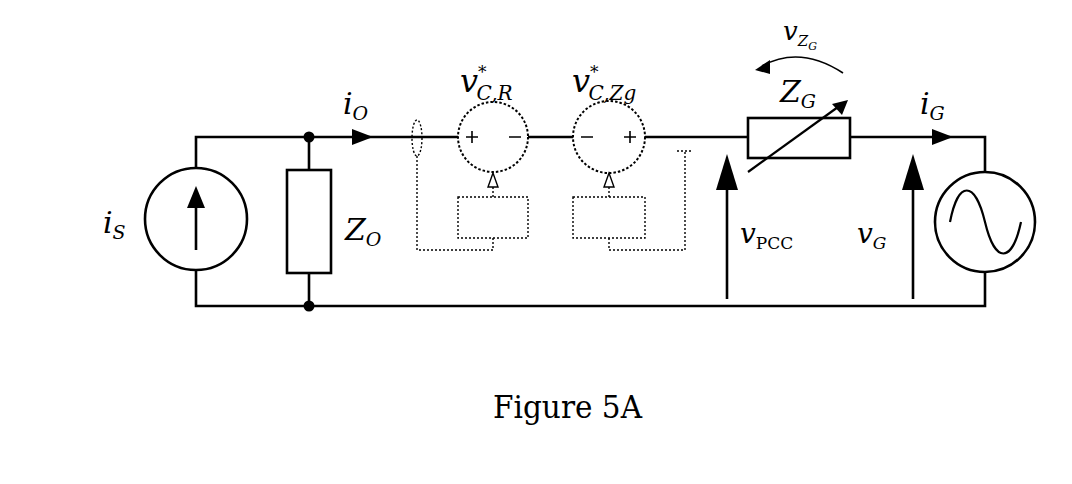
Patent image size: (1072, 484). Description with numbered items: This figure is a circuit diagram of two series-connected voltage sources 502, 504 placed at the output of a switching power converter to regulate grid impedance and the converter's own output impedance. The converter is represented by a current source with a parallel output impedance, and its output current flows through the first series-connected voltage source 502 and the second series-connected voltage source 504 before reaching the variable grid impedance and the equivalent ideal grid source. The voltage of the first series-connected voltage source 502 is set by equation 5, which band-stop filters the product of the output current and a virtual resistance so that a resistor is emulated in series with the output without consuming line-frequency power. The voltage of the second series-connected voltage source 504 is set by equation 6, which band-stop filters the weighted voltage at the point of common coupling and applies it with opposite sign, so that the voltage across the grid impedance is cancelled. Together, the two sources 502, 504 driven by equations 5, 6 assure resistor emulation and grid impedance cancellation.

The series-connected voltage source 502 is at (471, 121).
The series-connected voltage source 504 is at (628, 121).
The equation 5 is at (493, 217).
The equation 6 is at (609, 217).